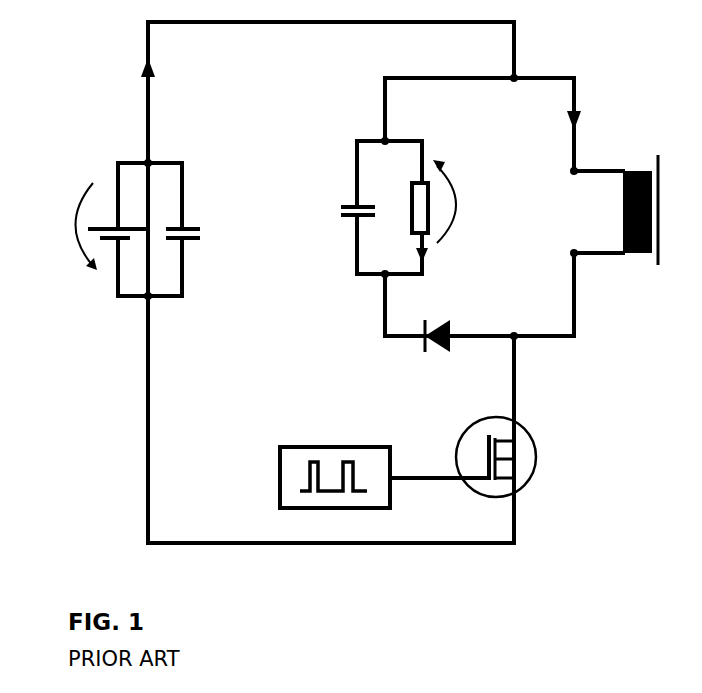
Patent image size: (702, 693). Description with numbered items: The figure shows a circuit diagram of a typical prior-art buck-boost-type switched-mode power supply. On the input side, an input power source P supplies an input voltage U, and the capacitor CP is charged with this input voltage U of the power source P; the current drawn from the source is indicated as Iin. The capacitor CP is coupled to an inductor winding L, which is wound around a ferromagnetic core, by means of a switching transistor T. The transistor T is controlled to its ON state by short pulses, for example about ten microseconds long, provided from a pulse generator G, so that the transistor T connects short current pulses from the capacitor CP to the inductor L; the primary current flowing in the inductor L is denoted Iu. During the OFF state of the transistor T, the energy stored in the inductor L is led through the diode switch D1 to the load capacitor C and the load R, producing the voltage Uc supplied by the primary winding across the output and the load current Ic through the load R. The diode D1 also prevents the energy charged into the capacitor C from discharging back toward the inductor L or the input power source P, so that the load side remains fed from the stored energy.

The input power source P is at (107, 220).
The capacitor CP is at (187, 222).
The input voltage U is at (69, 226).
The load capacitor C is at (335, 204).
The load R is at (407, 200).
The voltage supplied by primary winding Uc is at (458, 201).
The load current Ic is at (430, 259).
The inductor winding L is at (622, 222).
The diode switch D1 is at (455, 326).
The pulse generator G is at (360, 443).
The switching transistor T is at (535, 452).
The input current Iin is at (163, 69).
The primary current Iu is at (585, 123).